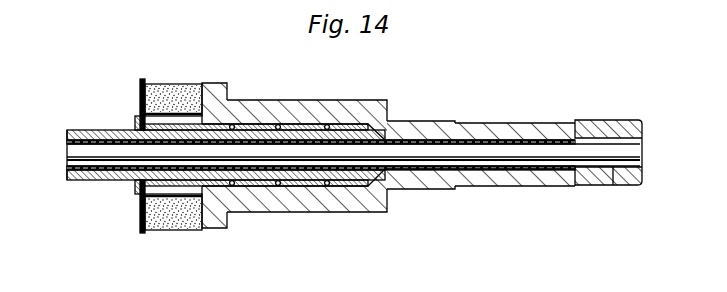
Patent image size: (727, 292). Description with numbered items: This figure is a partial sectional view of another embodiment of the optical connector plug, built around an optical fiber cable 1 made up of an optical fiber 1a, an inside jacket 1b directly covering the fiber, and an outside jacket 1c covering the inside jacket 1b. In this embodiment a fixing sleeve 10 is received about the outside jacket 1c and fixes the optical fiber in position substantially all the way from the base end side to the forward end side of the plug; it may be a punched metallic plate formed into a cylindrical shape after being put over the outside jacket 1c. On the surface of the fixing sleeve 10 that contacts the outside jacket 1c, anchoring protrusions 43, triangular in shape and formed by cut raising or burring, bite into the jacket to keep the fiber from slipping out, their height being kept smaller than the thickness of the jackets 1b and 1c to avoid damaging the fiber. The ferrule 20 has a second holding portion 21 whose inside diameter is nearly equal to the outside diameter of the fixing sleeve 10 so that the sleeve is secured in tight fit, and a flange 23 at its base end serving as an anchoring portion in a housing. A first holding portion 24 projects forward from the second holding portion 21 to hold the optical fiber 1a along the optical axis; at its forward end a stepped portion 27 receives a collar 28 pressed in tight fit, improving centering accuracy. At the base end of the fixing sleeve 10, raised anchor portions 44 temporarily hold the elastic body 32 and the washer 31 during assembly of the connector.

The optical fiber cable 1 is at (79, 127).
The optical fiber 1a is at (525, 158).
The inside jacket 1b is at (85, 181).
The outside jacket 1c is at (103, 181).
The fixing sleeve 10 is at (299, 191).
The ferrule 20 is at (446, 116).
The second holding portion 21 is at (338, 100).
The flange 23 is at (228, 97).
The first holding portion 24 is at (420, 121).
The stepped portion 27 is at (613, 186).
The collar 28 is at (610, 120).
The washer 31 is at (141, 78).
The elastic body 32 is at (181, 84).
The anchoring protrusions 43 is at (323, 182).
The raised anchor portions 44 is at (135, 121).